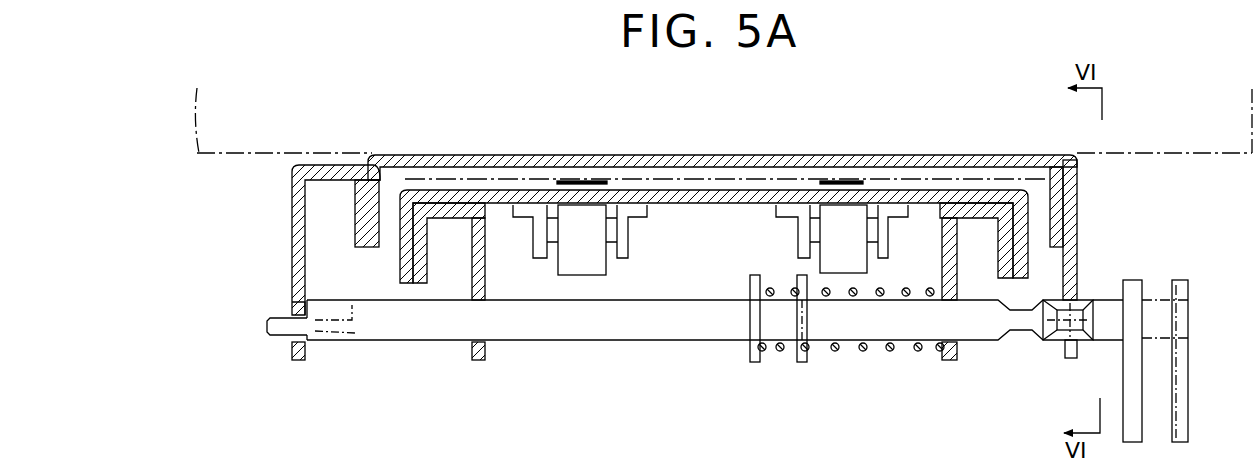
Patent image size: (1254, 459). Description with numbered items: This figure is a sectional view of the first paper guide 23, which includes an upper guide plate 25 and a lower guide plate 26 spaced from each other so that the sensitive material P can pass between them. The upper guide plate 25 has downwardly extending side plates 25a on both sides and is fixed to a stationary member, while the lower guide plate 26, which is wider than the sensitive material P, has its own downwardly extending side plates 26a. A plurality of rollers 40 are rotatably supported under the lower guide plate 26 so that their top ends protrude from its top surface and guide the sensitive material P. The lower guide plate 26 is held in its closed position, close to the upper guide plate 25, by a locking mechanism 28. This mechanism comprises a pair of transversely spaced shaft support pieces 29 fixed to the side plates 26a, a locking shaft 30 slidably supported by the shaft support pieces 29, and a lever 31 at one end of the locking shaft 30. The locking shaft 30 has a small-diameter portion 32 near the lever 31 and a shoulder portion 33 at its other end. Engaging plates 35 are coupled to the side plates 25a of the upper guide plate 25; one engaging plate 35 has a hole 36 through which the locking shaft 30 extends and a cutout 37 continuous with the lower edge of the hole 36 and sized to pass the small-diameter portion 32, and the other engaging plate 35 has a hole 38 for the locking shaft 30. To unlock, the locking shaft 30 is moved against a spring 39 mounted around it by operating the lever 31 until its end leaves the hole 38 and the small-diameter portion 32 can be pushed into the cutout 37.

The first paper guide 23 is at (419, 156).
The sensitive material P is at (484, 176).
The upper guide plate 25 is at (762, 164).
The side plates 25a is at (368, 203).
The lower guide plate 26 is at (718, 197).
The side plates 26a is at (403, 284).
The locking mechanism 28 is at (1094, 281).
The shaft support pieces 29 is at (466, 292).
The locking shaft 30 is at (680, 328).
The lever 31 is at (1135, 400).
The small-diameter portion 32 is at (1031, 326).
The shoulder portion 33 is at (305, 305).
The engaging plates 35 is at (292, 252).
The hole 36 is at (1095, 310).
The cutout 37 is at (1072, 350).
The hole 38 is at (305, 337).
The spring 39 is at (830, 349).
The rollers 40 is at (847, 215).